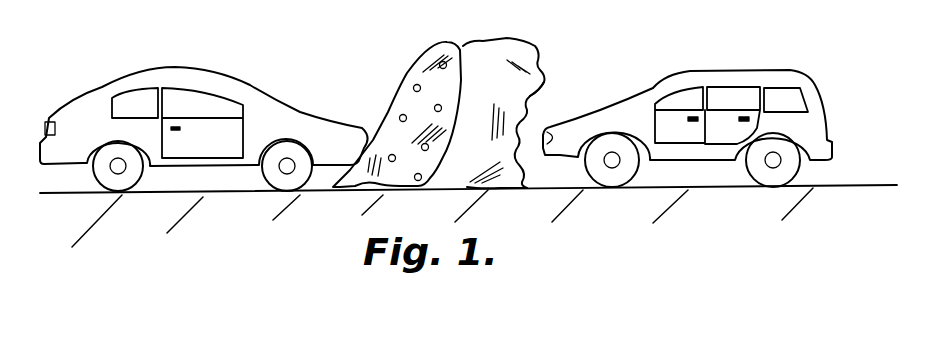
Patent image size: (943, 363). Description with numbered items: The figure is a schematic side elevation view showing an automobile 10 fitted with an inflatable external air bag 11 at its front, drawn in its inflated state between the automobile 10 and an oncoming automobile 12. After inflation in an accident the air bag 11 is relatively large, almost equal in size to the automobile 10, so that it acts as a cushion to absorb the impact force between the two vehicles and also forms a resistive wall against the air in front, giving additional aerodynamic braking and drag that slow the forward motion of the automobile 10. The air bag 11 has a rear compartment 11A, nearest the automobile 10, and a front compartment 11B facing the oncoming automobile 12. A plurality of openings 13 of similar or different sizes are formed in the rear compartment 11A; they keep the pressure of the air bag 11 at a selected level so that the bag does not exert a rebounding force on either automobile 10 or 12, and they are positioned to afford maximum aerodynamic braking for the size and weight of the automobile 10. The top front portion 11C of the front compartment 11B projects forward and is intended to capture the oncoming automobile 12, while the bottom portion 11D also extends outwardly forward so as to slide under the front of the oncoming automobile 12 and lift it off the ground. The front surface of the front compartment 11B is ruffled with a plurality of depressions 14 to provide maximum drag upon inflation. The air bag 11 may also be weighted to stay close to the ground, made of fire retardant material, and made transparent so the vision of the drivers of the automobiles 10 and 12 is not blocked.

The automobile 10 is at (243, 88).
The inflatable external air bag 11 is at (470, 119).
The rear compartment 11A is at (397, 114).
The front compartment 11B is at (535, 105).
The top front portion 11C is at (540, 80).
The bottom portion 11D is at (524, 184).
The oncoming automobile 12 is at (803, 75).
The openings 13 is at (400, 116).
The depressions 14 is at (530, 98).